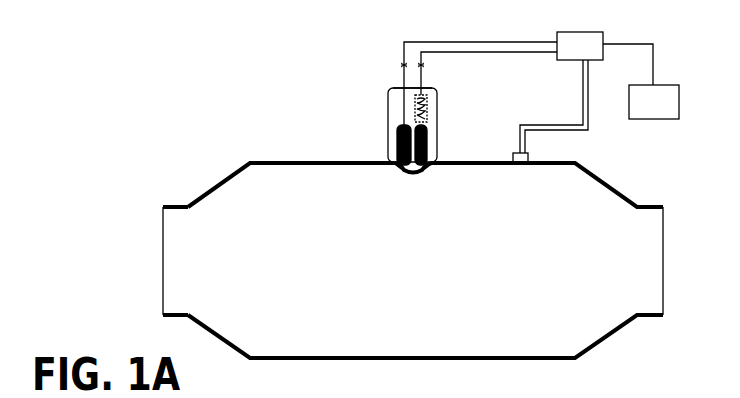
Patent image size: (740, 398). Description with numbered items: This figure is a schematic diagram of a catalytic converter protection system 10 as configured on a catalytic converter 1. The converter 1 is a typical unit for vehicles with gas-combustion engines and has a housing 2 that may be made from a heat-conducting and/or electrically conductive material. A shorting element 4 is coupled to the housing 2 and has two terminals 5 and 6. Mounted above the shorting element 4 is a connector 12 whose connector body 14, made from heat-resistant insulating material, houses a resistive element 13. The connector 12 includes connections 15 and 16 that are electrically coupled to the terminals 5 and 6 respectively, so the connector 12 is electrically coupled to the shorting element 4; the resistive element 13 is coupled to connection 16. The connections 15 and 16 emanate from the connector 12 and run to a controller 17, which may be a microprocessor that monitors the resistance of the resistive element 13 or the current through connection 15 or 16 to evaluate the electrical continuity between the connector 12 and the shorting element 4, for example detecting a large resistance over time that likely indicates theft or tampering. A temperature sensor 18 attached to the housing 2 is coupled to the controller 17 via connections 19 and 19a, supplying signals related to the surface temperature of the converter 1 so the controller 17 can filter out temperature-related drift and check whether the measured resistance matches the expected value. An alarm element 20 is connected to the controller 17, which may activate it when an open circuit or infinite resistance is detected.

The catalytic converter 1 is at (208, 177).
The housing 2 is at (274, 162).
The shorting element 4 is at (405, 170).
The terminal 5 is at (397, 134).
The terminal 6 is at (428, 140).
The catalytic converter protection system 10 is at (273, 95).
The connector 12 is at (388, 112).
The resistive element 13 is at (430, 103).
The connector body 14 is at (394, 88).
The connection 15 is at (404, 44).
The connection 16 is at (460, 56).
The controller 17 is at (589, 55).
The temperature sensor 18 is at (514, 152).
The connection 19 is at (553, 125).
The connection 19a is at (565, 131).
The alarm element 20 is at (662, 110).